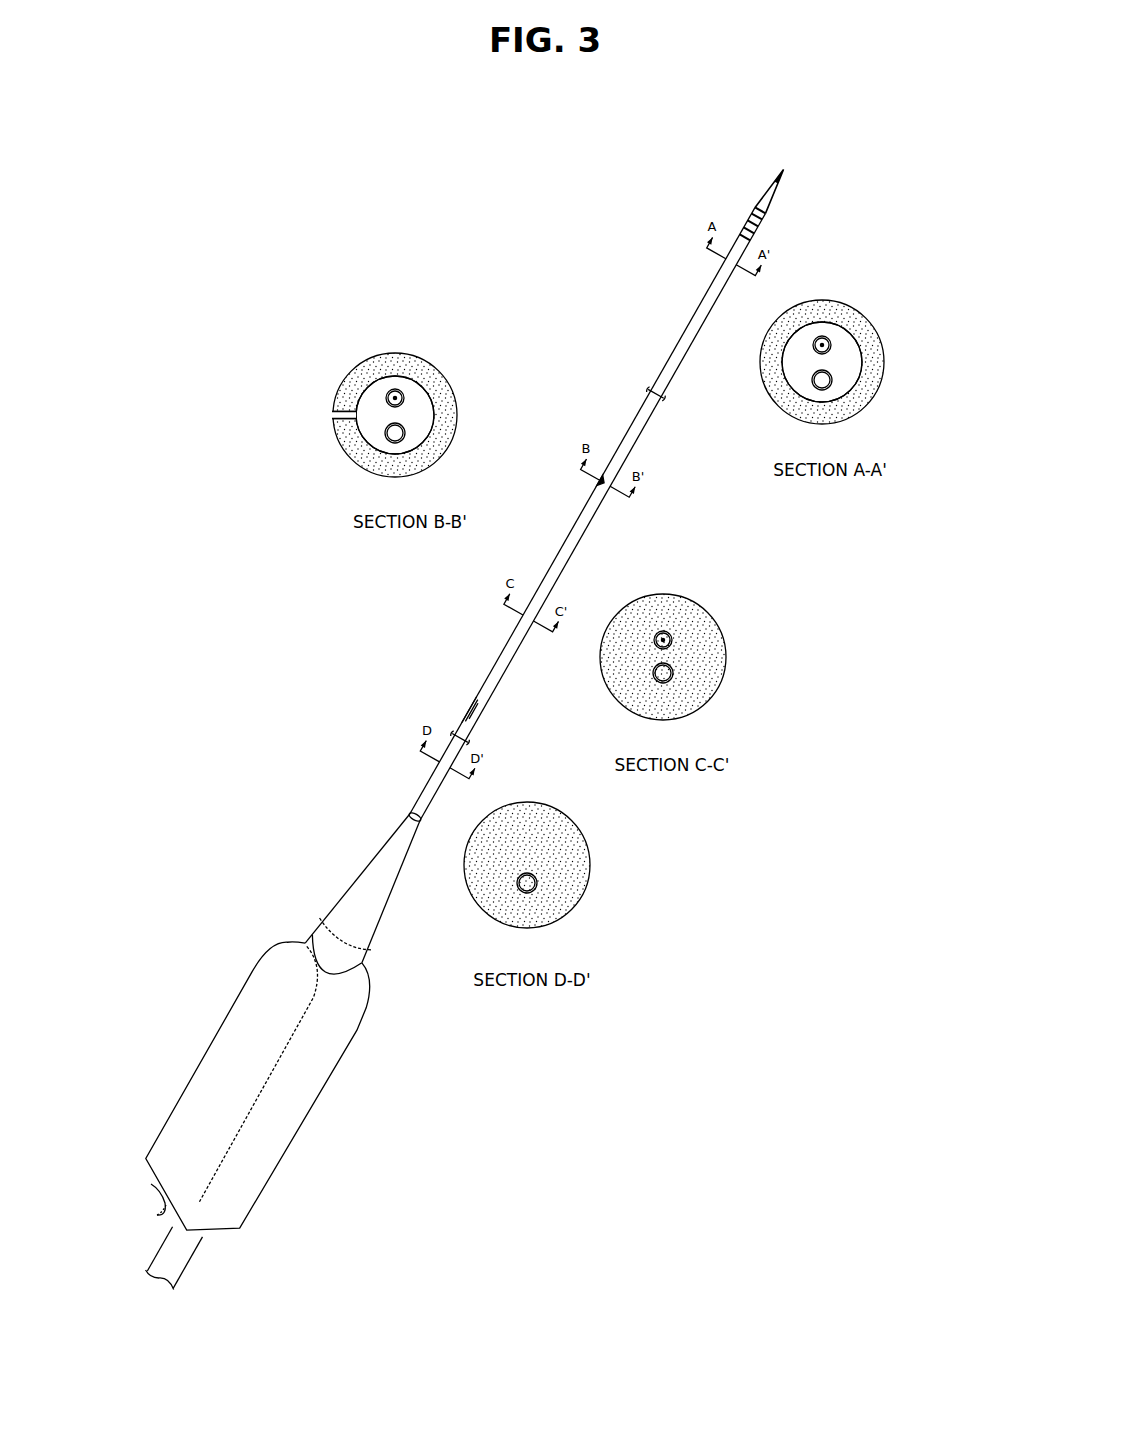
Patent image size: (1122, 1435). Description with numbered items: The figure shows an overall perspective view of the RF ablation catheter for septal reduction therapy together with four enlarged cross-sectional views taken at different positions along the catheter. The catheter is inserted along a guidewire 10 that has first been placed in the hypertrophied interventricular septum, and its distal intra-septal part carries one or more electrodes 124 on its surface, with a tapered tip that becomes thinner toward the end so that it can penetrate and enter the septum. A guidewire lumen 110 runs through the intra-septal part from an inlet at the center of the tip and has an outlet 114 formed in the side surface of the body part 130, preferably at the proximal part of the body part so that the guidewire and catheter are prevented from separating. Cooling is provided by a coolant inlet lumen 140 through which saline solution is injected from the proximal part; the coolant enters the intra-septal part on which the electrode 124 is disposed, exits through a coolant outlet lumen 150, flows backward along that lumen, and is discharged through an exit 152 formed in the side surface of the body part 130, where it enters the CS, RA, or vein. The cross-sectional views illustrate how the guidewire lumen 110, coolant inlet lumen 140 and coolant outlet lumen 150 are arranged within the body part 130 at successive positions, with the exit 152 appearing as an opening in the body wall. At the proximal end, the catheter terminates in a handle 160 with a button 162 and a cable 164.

The guidewire 10 is at (778, 183).
The electrode 124 is at (754, 233).
The guidewire lumen 110 is at (810, 350).
The coolant outlet lumen 150 is at (850, 352).
The coolant inlet lumen 140 is at (833, 380).
The body part 130 is at (778, 402).
The exit of the coolant outlet lumen 152 is at (597, 483).
The outlet of the guidewire lumen 114 is at (471, 700).
The handle 160 is at (300, 1110).
The button 162 is at (158, 1205).
The cable 164 is at (196, 1250).